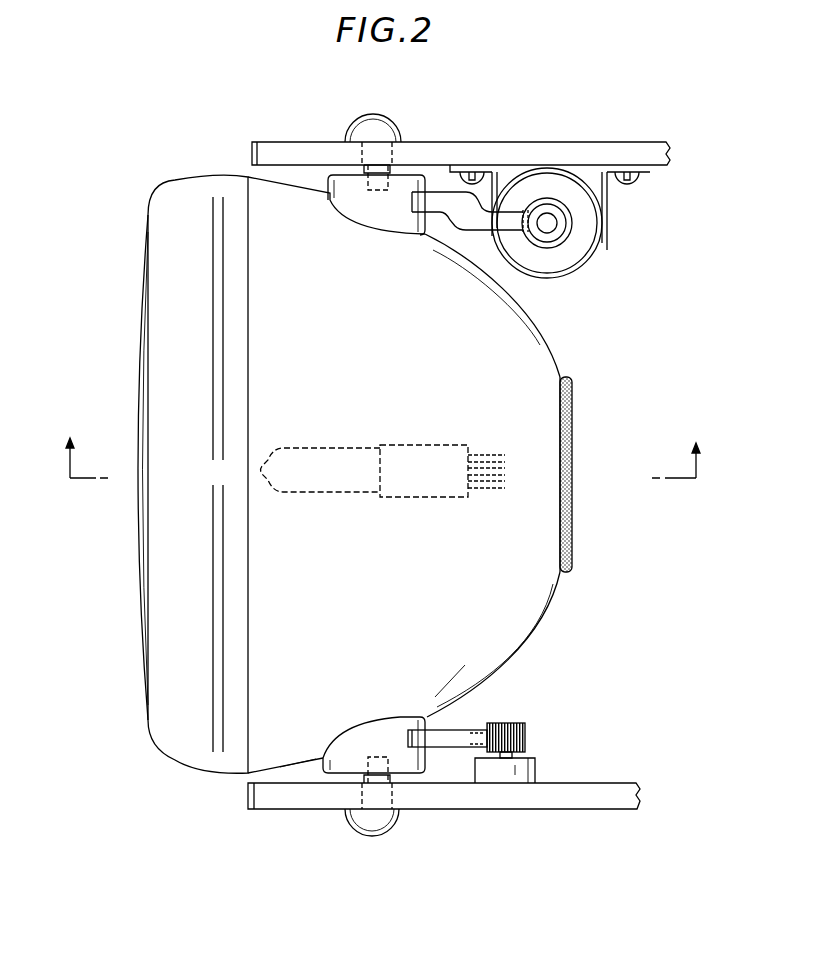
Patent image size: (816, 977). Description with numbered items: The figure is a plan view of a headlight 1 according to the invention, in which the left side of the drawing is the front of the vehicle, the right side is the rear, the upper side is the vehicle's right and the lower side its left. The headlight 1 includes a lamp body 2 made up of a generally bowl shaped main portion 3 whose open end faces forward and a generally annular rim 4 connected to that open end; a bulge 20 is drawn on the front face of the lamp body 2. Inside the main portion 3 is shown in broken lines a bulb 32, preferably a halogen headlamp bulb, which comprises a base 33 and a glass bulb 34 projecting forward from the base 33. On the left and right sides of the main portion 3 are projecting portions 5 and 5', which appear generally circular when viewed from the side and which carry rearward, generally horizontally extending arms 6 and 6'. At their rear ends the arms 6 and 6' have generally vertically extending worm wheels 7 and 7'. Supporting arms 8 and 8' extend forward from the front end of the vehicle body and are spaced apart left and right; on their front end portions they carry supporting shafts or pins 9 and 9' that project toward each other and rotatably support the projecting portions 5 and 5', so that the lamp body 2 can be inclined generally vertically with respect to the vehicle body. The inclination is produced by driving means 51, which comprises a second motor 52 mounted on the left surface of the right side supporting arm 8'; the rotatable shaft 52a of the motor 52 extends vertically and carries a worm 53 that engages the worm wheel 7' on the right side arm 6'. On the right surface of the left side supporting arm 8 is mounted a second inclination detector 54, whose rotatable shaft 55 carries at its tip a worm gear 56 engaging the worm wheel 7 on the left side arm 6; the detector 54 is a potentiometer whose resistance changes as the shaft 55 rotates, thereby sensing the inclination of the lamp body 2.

The headlight 1 is at (162, 114).
The lamp body 2 is at (224, 834).
The main portion 3 is at (250, 774).
The rim 4 is at (203, 770).
The lens 20 is at (142, 385).
The bulb 32 is at (410, 445).
The base 33 is at (422, 498).
The glass bulb 34 is at (313, 450).
The projecting portion 5 is at (369, 727).
The projecting portion 5' is at (376, 226).
The arm 6 is at (451, 716).
The arm 6' is at (467, 247).
The worm wheel 7 is at (501, 709).
The worm wheel 7' is at (534, 165).
The supporting arm 8 is at (444, 826).
The supporting arm 8' is at (461, 129).
The supporting pin 9 is at (344, 807).
The supporting pin 9' is at (349, 147).
The driving means 51 is at (614, 229).
The second motor 52 is at (593, 238).
The rotatable shaft 52a is at (562, 236).
The worm 53 is at (554, 248).
The second inclination detector 54 is at (536, 769).
The rotatable shaft 55 is at (522, 756).
The worm gear 56 is at (522, 737).